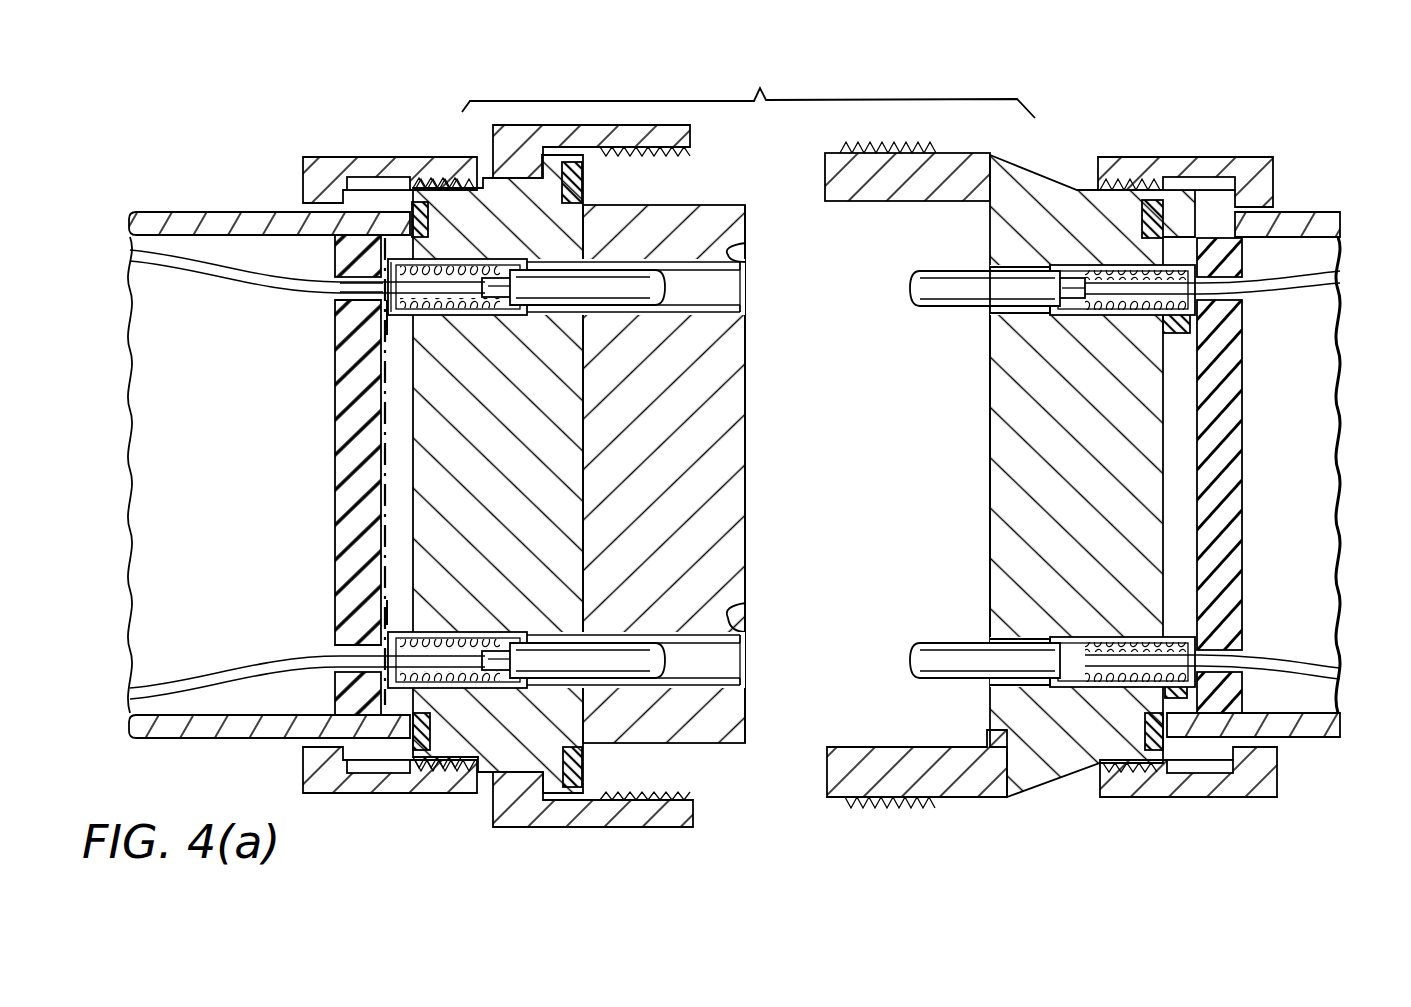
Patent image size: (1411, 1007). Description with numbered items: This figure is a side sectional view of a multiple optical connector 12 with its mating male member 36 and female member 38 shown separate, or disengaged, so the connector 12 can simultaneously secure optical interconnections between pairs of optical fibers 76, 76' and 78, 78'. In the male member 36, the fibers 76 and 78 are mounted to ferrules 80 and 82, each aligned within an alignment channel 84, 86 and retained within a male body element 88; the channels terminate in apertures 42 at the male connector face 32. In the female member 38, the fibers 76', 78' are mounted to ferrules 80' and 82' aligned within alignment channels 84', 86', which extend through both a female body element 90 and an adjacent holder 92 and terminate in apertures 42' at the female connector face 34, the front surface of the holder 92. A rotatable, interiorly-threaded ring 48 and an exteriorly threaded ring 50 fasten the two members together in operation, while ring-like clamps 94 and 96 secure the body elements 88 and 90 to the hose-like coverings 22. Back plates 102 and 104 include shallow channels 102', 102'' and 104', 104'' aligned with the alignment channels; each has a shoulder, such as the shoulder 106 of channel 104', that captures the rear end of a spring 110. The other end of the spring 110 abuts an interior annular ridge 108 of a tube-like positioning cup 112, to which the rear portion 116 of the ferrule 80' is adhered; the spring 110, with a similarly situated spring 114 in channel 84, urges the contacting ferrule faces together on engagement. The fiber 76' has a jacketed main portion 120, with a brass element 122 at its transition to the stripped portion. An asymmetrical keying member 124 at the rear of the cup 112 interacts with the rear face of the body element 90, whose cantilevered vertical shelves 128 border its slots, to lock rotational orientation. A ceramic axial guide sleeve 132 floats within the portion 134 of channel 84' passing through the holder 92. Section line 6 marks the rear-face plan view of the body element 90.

The connector 12 is at (748, 86).
The hose-like covering 22 is at (172, 206).
The male connector face 32 is at (990, 447).
The female connector face 34 is at (748, 432).
The male member 36 is at (1311, 109).
The female member 38 is at (254, 113).
The apertures 42 is at (995, 469).
The apertures 42' is at (773, 426).
The rotatable, interiorly-threaded ring 48 is at (642, 822).
The exteriorly threaded ring 50 is at (860, 771).
The optical fiber 76 is at (1212, 333).
The optical fiber 76' is at (290, 334).
The optical fiber 78 is at (1212, 629).
The optical fiber 78' is at (307, 652).
The ferrule 80 is at (970, 312).
The ferrule 80' is at (587, 236).
The ferrule 82 is at (963, 631).
The ferrule 82' is at (608, 713).
The alignment channel 84 is at (950, 329).
The alignment channel 84' is at (792, 281).
The alignment channel 86 is at (1053, 621).
The alignment channel 86' is at (792, 661).
The male body element 88 is at (1092, 476).
The female body element 90 is at (498, 474).
The holder 92 is at (664, 474).
The ring-like clamp 94 is at (1198, 155).
The ring-like clamp 96 is at (356, 158).
The back plate 102 is at (1259, 475).
The channel 102' is at (1292, 213).
The channel 102'' is at (1270, 691).
The back plate 104 is at (297, 490).
The channel 104' is at (318, 359).
The channel 104'' is at (312, 625).
The shoulder 106 is at (348, 240).
The interior annular ridge 108 is at (506, 320).
The spring 110 is at (445, 265).
The cup 112 is at (463, 326).
The spring 114 is at (1125, 285).
The rear portion 116 is at (528, 322).
The main portion 120 is at (240, 274).
The brass element 122 is at (506, 278).
The keying member 124 is at (400, 262).
The cantilevered vertical shelves 128 is at (396, 477).
The axial guide sleeve 132 is at (745, 301).
The portion 134 is at (742, 318).
The line 6— 6 is at (380, 247).